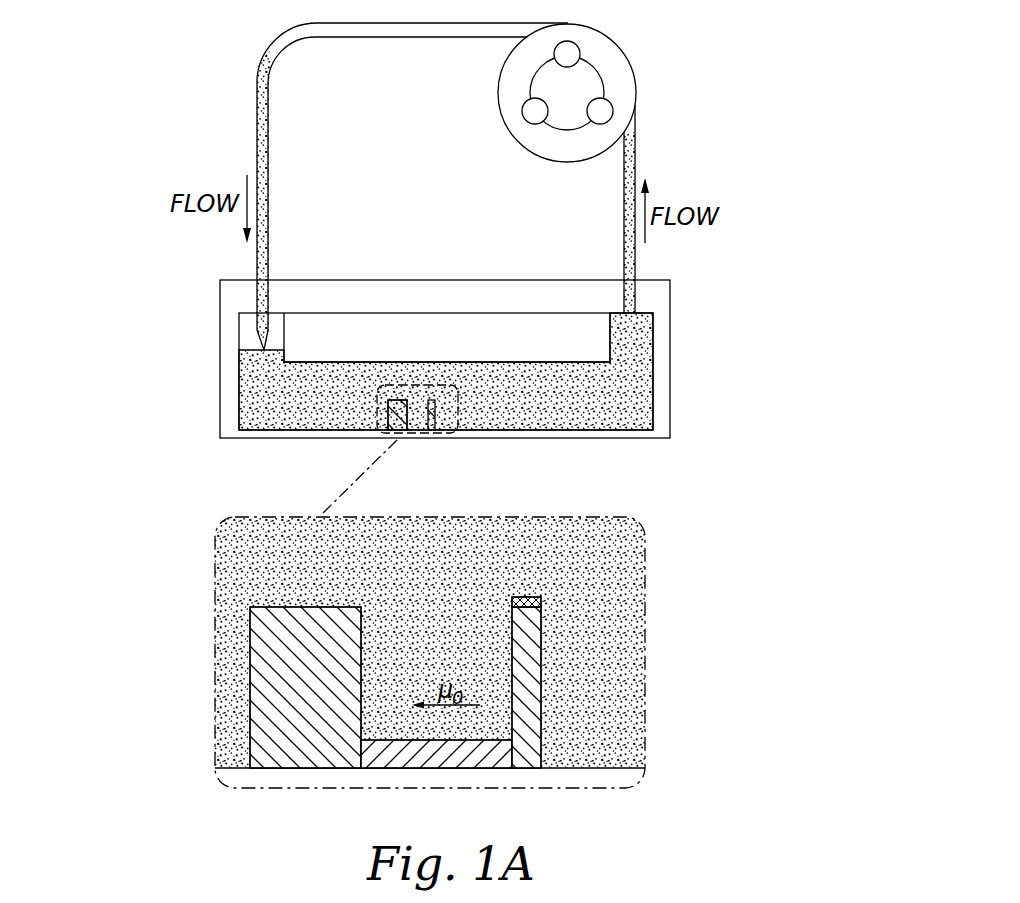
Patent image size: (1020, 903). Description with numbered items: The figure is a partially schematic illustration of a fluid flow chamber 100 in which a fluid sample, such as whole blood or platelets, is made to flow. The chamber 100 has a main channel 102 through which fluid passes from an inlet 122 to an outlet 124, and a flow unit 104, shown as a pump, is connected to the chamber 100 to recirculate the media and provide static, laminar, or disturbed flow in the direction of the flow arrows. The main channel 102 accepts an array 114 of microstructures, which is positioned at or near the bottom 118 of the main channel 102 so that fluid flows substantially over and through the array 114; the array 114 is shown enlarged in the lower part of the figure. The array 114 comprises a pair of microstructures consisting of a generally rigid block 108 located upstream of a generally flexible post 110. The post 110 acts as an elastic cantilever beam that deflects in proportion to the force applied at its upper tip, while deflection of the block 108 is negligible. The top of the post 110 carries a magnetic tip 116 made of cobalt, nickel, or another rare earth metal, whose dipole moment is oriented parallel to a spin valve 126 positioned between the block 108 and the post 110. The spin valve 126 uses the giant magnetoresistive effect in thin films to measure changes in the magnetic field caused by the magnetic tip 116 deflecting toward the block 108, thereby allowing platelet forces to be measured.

The fluid flow chamber 100 is at (190, 86).
The main channel 102 is at (600, 298).
The flow unit 104 is at (587, 70).
The block 108 is at (262, 688).
The post 110 is at (535, 670).
The array 114 is at (448, 369).
The magnetic tip 116 is at (541, 600).
The bottom 118 is at (318, 430).
The inlet 122 is at (258, 152).
The outlet 124 is at (637, 152).
The spin valve 126 is at (460, 770).